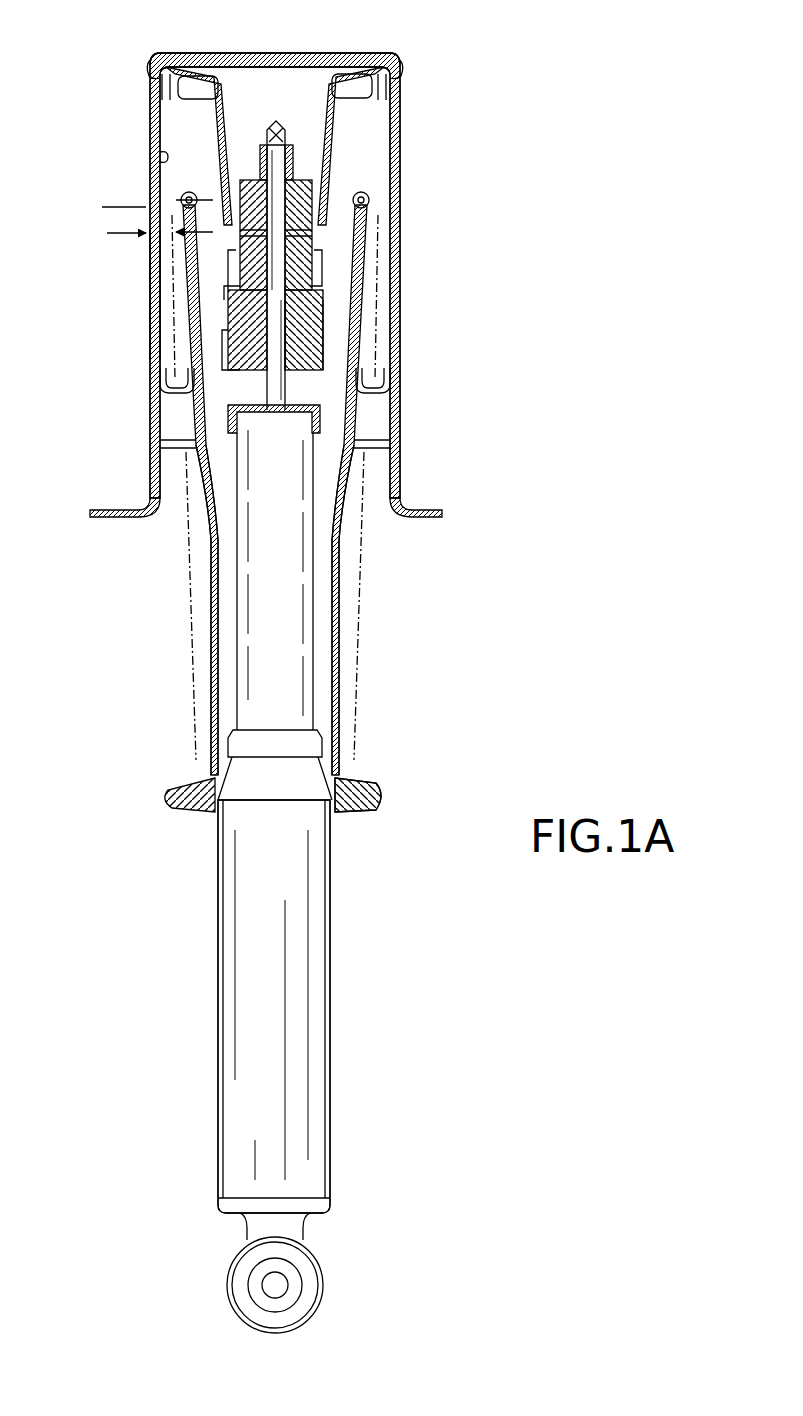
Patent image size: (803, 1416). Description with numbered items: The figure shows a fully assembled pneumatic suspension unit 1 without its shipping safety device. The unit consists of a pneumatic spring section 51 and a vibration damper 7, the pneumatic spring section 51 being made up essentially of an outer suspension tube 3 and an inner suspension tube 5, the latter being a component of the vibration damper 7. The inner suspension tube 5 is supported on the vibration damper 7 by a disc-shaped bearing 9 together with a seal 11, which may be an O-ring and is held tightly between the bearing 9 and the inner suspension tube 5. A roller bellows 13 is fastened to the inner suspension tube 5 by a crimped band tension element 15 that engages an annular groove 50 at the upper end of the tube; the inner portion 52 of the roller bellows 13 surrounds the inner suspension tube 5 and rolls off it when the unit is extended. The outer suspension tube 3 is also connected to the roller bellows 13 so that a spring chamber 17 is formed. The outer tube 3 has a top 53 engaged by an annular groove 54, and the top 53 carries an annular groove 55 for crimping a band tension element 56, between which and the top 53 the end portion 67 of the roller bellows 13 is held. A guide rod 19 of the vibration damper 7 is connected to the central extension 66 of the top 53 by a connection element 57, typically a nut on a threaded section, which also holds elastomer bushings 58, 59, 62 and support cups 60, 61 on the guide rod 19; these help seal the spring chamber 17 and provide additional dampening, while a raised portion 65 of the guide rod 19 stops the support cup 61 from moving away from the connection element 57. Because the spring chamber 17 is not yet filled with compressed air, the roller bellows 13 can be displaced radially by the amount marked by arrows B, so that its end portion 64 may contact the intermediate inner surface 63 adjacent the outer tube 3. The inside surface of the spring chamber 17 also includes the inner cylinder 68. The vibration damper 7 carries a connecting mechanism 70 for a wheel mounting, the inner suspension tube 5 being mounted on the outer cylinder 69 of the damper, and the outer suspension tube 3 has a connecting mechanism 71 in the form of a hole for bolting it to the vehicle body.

The pneumatic suspension unit 1 is at (135, 935).
The outer suspension tube 3 is at (400, 430).
The inner suspension tube 5 is at (338, 673).
The vibration damper 7 is at (331, 1000).
The disc-shaped bearing 9 is at (352, 817).
The seal 11 is at (363, 783).
The roller bellows 13 is at (375, 392).
The band tension element 15 is at (372, 203).
The spring chamber 17 is at (355, 140).
The guide rod 19 is at (345, 335).
The annular groove 50 is at (400, 153).
The pneumatic spring section 51 is at (146, 287).
The inner portion of roller bellows 52 is at (362, 362).
The top 53 is at (350, 66).
The annular groove 54 is at (152, 60).
The annular groove 55 is at (372, 100).
The band tension element 56 is at (397, 72).
The connection element 57 is at (260, 150).
The elastomer bushing 58 is at (320, 232).
The elastomer bushing 59 is at (323, 240).
The support cup 60 is at (227, 263).
The support cup 61 is at (223, 303).
The elastomer bushing 62 is at (317, 303).
The inner surface of roller bellows 63 is at (160, 157).
The end portion of roller bellows 64 is at (186, 196).
The raised portion 65 is at (225, 330).
The central extension 66 is at (218, 153).
The end portion of roller bellows 67 is at (165, 95).
The inner cylinder 68 is at (235, 658).
The outer cylinder 69 is at (216, 1017).
The connecting mechanism 70 is at (238, 1285).
The connecting mechanism 71 is at (105, 518).
The arrows B is at (145, 212).